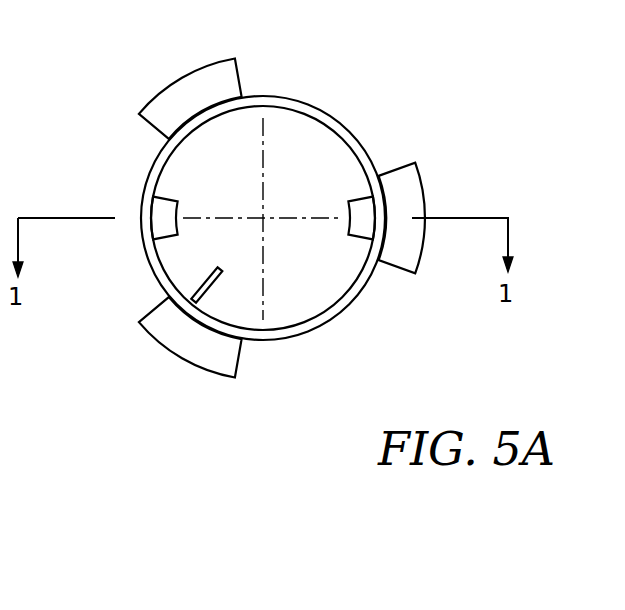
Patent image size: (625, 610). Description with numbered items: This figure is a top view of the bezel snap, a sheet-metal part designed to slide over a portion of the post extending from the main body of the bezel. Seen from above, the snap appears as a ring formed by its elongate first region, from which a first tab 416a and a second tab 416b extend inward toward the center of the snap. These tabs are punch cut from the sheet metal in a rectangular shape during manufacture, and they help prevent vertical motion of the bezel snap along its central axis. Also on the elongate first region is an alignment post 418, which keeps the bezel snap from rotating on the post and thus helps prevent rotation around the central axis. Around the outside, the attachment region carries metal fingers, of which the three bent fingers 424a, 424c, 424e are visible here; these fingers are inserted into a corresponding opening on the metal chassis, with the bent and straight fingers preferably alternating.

The bent finger 424a is at (203, 82).
The bent finger 424c is at (415, 183).
The bent finger 424e is at (230, 365).
The first tab 416a is at (166, 200).
The second tab 416b is at (350, 198).
The alignment post 418 is at (220, 268).